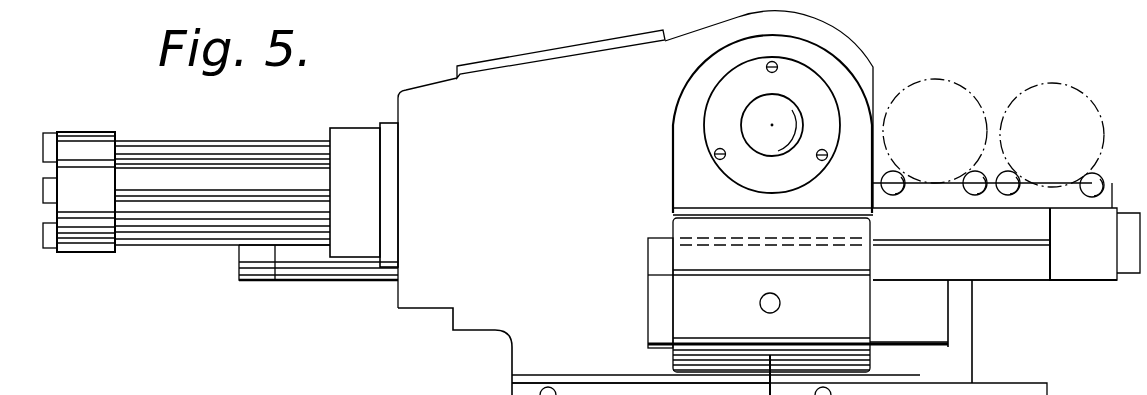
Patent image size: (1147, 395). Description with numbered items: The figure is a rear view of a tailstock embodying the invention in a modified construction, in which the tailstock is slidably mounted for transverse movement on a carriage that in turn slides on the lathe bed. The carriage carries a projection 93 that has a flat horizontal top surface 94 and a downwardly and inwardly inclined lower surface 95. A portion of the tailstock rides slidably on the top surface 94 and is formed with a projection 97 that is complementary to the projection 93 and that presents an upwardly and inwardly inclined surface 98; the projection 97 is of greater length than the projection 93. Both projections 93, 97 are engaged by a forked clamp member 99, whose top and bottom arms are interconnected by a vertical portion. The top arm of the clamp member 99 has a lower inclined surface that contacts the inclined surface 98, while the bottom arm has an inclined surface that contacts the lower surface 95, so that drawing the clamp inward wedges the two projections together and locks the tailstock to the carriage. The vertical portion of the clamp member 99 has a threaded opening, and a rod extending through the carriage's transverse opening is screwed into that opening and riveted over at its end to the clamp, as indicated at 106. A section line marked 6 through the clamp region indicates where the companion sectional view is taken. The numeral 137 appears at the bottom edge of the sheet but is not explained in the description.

The section line for FIG. 6 is at (770, 252).
The projection 93 is at (910, 311).
The flat horizontal top surface 94 is at (925, 277).
The downwardly and inwardly inclined lower surface 95 is at (940, 353).
The projection 97 is at (1033, 265).
The upwardly and inwardly inclined surface 98 is at (1033, 243).
The forked clamp member 99 is at (682, 298).
The riveted end of rod 106 is at (780, 302).
The base member 137 is at (526, 388).